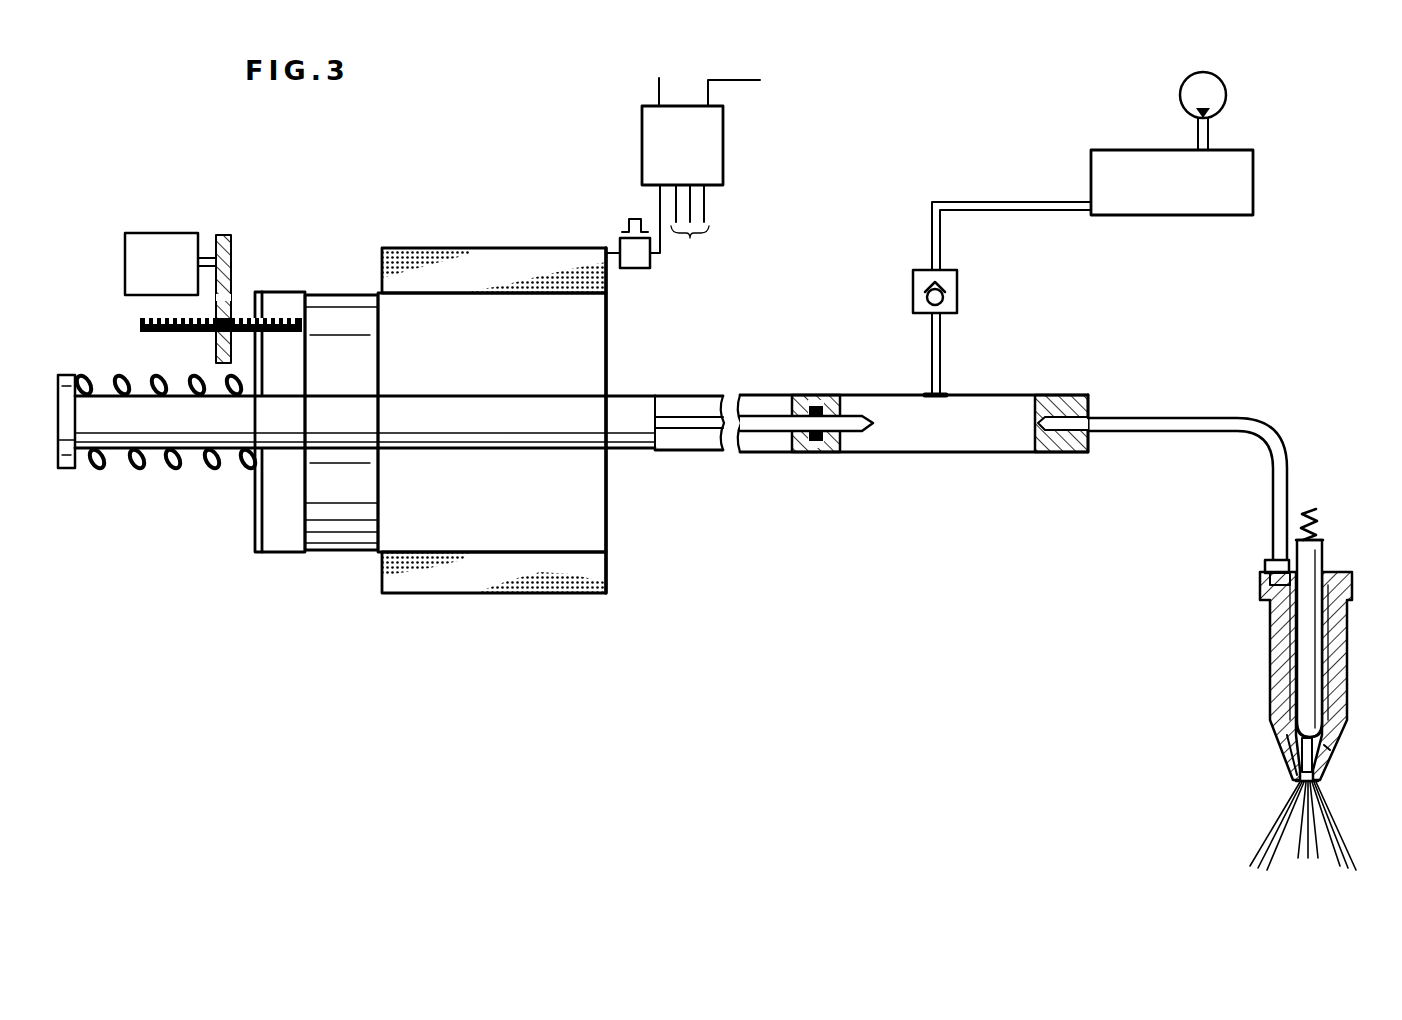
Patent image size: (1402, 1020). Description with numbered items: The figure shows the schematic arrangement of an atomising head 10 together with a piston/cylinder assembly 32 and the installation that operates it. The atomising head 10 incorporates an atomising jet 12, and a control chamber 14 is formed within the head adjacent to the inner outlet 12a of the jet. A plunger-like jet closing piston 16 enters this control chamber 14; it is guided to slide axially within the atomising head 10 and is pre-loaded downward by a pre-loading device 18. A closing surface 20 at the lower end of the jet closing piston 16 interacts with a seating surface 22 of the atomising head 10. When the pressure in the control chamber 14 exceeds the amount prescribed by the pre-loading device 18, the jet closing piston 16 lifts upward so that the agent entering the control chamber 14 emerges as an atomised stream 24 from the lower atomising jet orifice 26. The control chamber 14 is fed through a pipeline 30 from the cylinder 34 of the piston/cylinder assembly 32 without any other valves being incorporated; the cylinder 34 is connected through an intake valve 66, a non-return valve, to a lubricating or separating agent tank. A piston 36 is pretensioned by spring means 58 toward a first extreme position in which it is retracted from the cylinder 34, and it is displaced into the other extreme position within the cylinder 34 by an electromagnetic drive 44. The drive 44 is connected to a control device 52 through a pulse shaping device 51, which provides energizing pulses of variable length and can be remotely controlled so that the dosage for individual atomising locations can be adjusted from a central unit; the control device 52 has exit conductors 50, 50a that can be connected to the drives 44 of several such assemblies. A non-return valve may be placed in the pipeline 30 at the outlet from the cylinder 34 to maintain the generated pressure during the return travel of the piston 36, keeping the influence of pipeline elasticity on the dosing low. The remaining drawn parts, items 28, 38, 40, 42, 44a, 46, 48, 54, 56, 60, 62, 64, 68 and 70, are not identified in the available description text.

The atomising head 10 is at (1293, 682).
The atomising jet 12 is at (1324, 770).
The inner outlet of the jet 12a is at (1330, 750).
The control chamber 14 is at (1325, 655).
The jet closing piston 16 is at (1305, 650).
The pre-loading device 18 is at (1322, 530).
The closing surface 20 is at (1305, 730).
The seating surface 22 is at (1291, 745).
The atomised stream 24 is at (1328, 833).
The lower atomising jet orifice 26 is at (1293, 779).
The spray jet 28 is at (1287, 806).
The pipeline 30 is at (1186, 420).
The piston/cylinder assembly 32 is at (913, 428).
The cylinder 34 is at (972, 395).
The piston 36 is at (763, 416).
The seal gland 38 is at (815, 453).
The shaft 40 is at (535, 448).
The rotor 42 is at (362, 362).
The electromagnetic drive 44 is at (477, 434).
The housing end wall 44a is at (612, 348).
The stator winding 46 is at (575, 551).
The stator winding 48 is at (530, 250).
The exit conductor 50 is at (660, 210).
The exit conductor 50a is at (721, 226).
The pulse shaping device 51 is at (635, 268).
The control device 52 is at (718, 138).
The input line 54 is at (659, 92).
The input line 56 is at (760, 80).
The spring means 58 is at (137, 465).
The rack 60 is at (145, 335).
The drive unit 62 is at (160, 233).
The gear 64 is at (232, 275).
The intake valve 66 is at (960, 293).
The pressure source 68 is at (1145, 205).
The pressure gauge 70 is at (1180, 108).